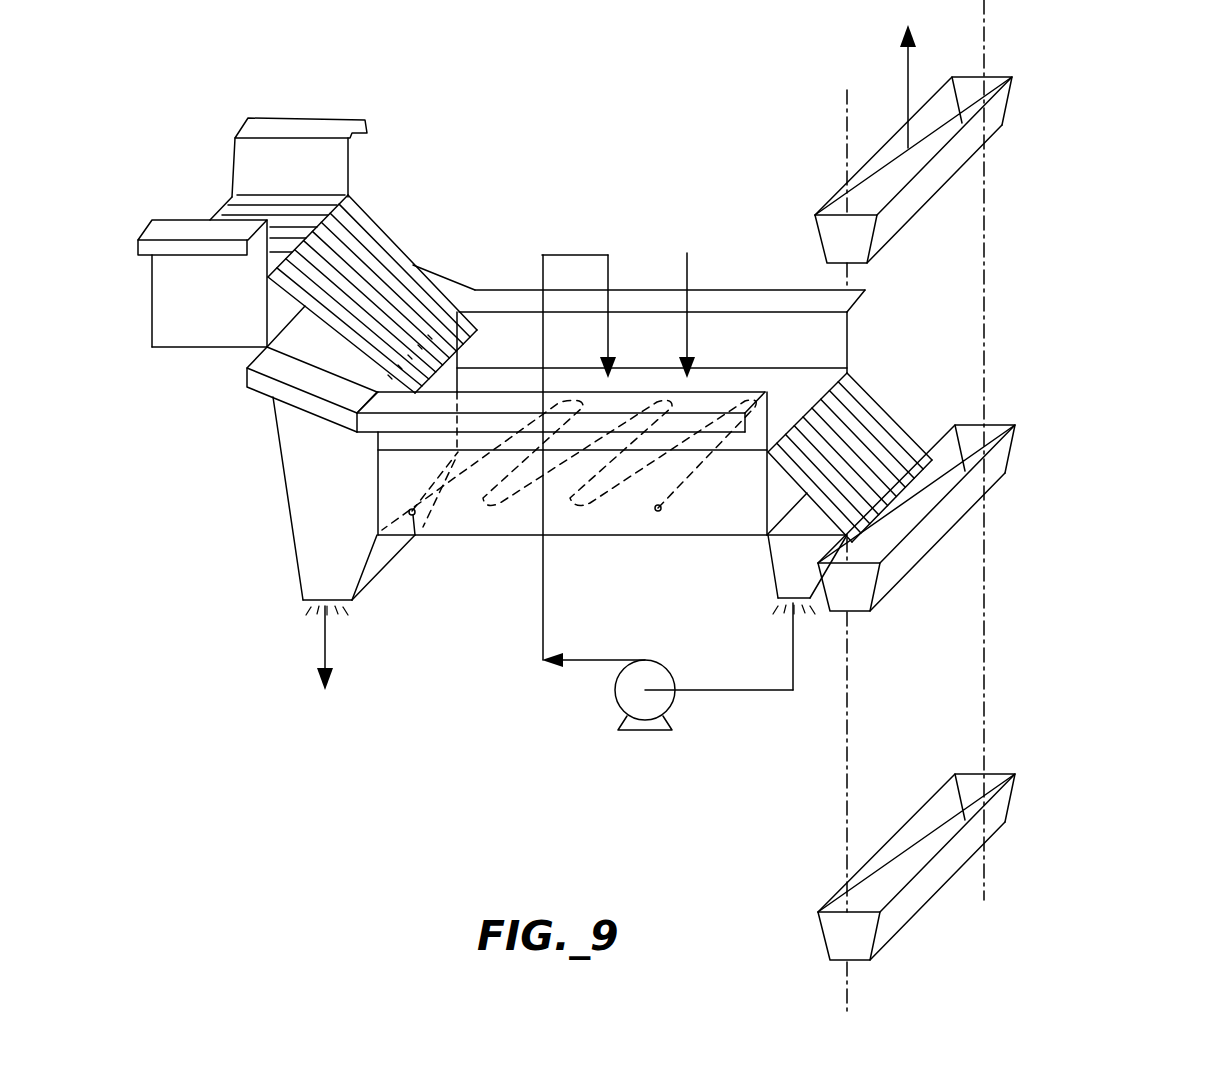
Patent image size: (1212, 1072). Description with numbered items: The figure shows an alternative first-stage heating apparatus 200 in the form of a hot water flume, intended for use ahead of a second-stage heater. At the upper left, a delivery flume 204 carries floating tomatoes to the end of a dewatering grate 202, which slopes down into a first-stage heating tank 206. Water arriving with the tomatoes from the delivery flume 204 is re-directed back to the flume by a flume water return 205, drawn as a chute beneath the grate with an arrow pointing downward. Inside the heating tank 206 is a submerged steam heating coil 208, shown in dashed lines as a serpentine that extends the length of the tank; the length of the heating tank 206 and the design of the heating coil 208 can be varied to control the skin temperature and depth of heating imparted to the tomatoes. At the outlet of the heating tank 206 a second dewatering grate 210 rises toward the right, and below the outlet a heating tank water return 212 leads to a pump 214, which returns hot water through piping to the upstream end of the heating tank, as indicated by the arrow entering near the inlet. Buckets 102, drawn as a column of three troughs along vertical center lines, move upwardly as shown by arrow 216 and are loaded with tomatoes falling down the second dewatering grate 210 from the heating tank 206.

The first-stage heating apparatus 200 is at (620, 50).
The dewatering grate 202 is at (375, 220).
The delivery flume 204 is at (303, 117).
The flume water return 205 is at (327, 648).
The first-stage heating tank 206 is at (460, 537).
The submerged steam heating coil 208 is at (414, 515).
The second dewatering grate 210 is at (873, 397).
The heating tank water return 212 is at (792, 655).
The pump 214 is at (645, 732).
The arrow 216 is at (905, 93).
The buckets 102 is at (917, 192).